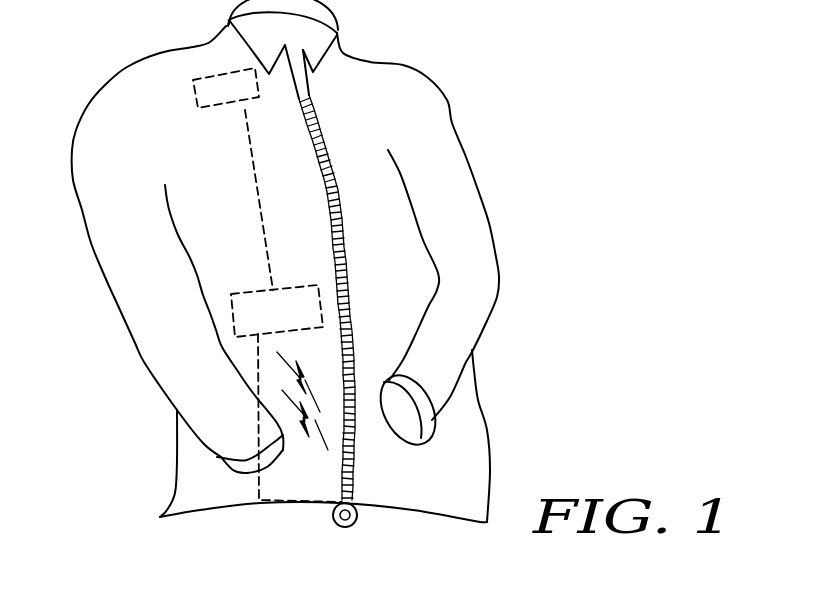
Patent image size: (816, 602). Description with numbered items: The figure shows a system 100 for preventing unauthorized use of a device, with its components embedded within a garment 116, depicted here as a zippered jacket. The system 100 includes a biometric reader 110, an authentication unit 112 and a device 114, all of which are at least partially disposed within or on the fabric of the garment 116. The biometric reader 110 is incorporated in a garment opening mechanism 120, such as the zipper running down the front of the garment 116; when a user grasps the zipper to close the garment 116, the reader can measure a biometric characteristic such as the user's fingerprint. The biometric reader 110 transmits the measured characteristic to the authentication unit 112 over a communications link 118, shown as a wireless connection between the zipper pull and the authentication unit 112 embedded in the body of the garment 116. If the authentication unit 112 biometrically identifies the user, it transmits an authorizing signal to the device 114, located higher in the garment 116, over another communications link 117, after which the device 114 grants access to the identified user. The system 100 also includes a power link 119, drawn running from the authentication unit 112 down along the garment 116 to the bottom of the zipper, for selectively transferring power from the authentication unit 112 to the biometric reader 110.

The system 100 is at (463, 0).
The biometric reader 110 is at (374, 525).
The authentication unit 112 is at (229, 284).
The device 114 is at (177, 82).
The garment 116 is at (457, 158).
The communications link 117 is at (246, 123).
The communications link 118 is at (318, 418).
The power link 119 is at (257, 495).
The garment opening mechanism 120 is at (326, 534).